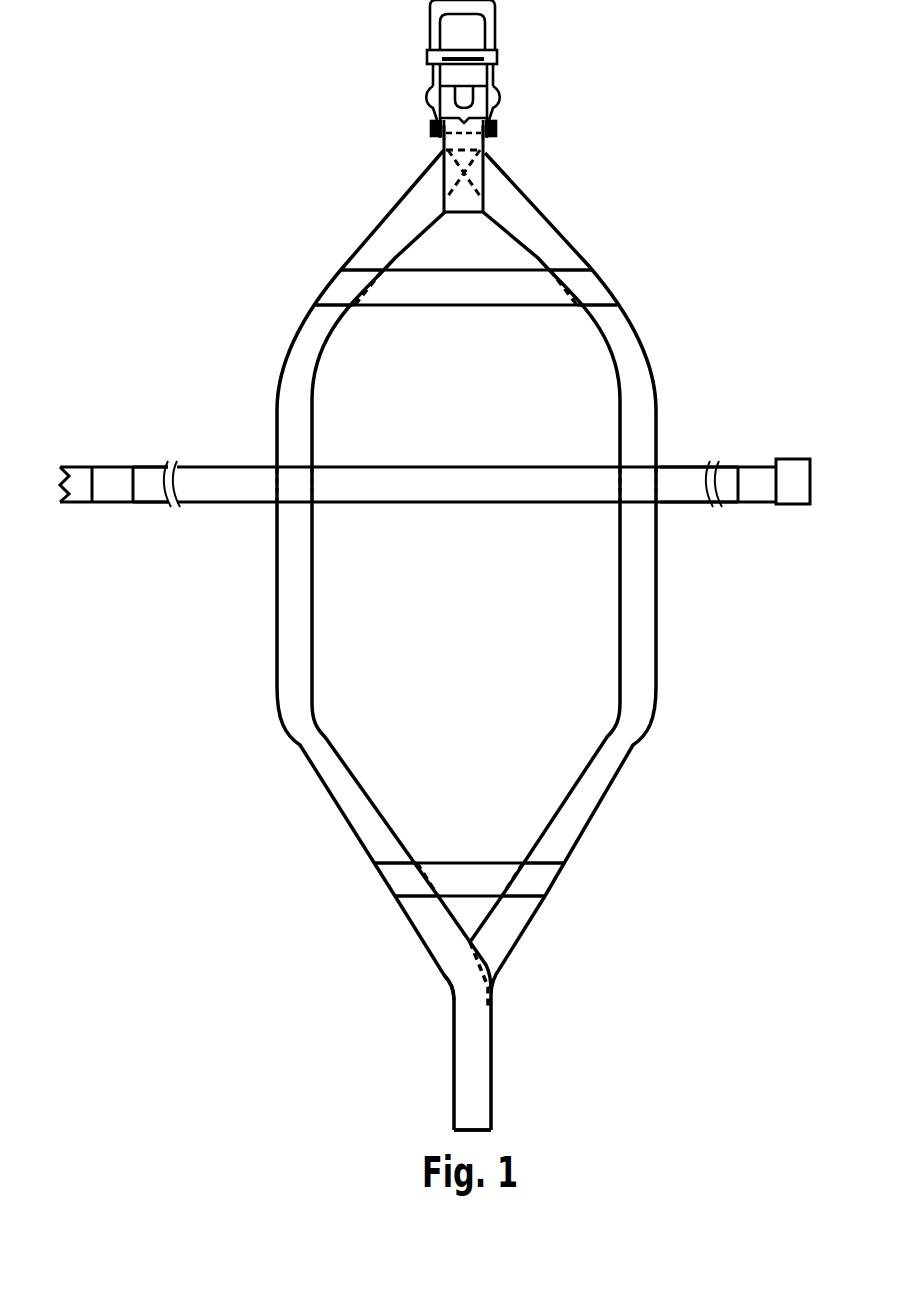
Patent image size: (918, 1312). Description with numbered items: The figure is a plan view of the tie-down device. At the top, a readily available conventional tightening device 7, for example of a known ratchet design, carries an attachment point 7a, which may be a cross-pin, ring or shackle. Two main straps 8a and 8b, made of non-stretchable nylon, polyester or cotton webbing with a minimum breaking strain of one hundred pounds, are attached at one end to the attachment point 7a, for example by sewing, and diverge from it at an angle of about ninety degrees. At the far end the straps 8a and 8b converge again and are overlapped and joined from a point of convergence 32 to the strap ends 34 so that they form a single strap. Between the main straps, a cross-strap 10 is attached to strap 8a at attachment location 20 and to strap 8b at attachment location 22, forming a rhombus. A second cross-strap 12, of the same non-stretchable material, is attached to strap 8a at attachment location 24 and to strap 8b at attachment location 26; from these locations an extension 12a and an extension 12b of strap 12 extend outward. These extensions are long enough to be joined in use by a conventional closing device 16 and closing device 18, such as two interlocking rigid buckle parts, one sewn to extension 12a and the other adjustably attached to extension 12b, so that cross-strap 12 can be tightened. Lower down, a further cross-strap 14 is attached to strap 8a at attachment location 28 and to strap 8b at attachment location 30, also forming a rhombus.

The tightening device 7 is at (498, 43).
The attachment point 7a is at (498, 125).
The main strap 8a is at (373, 215).
The main strap 8b is at (540, 203).
The cross-strap 10 is at (466, 313).
The cross-strap 12 is at (469, 512).
The extension of strap 12 12a is at (231, 513).
The extension of strap 12 12b is at (688, 513).
The cross-strap 14 is at (472, 857).
The closing device 16 is at (785, 462).
The closing device 18 is at (80, 465).
The attachment location 20 is at (317, 287).
The attachment location 22 is at (610, 282).
The attachment location 24 is at (270, 462).
The attachment location 26 is at (662, 462).
The attachment location 28 is at (375, 882).
The attachment location 30 is at (563, 878).
The point of convergence 32 is at (445, 992).
The strap ends 34 is at (452, 1132).